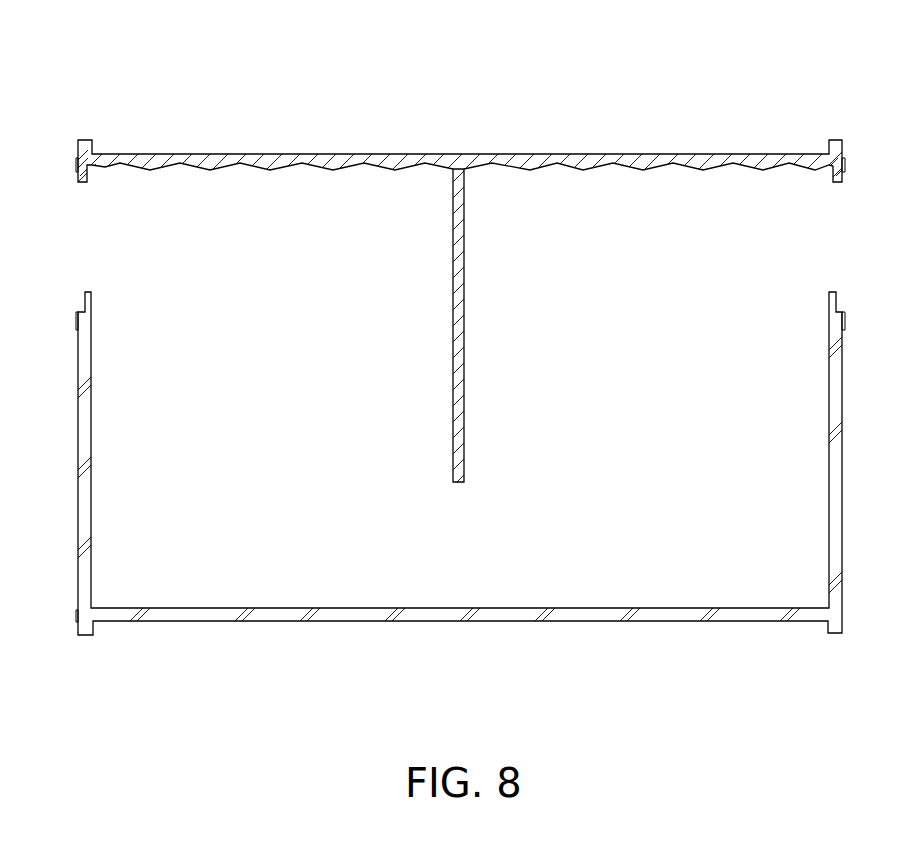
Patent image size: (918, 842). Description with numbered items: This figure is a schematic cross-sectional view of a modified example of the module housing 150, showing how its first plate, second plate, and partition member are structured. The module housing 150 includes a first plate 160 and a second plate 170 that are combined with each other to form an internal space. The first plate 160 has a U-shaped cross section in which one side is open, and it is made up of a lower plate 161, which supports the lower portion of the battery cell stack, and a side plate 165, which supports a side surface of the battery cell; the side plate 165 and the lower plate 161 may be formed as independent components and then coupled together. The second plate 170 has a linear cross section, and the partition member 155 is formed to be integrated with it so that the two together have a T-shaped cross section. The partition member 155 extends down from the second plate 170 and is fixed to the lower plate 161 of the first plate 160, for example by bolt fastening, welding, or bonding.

The module housing 150 is at (190, 68).
The second plate 170 is at (385, 163).
The partition member 155 is at (465, 352).
The first plate 160 is at (140, 693).
The side plate 165 is at (82, 577).
The lower plate 161 is at (125, 617).